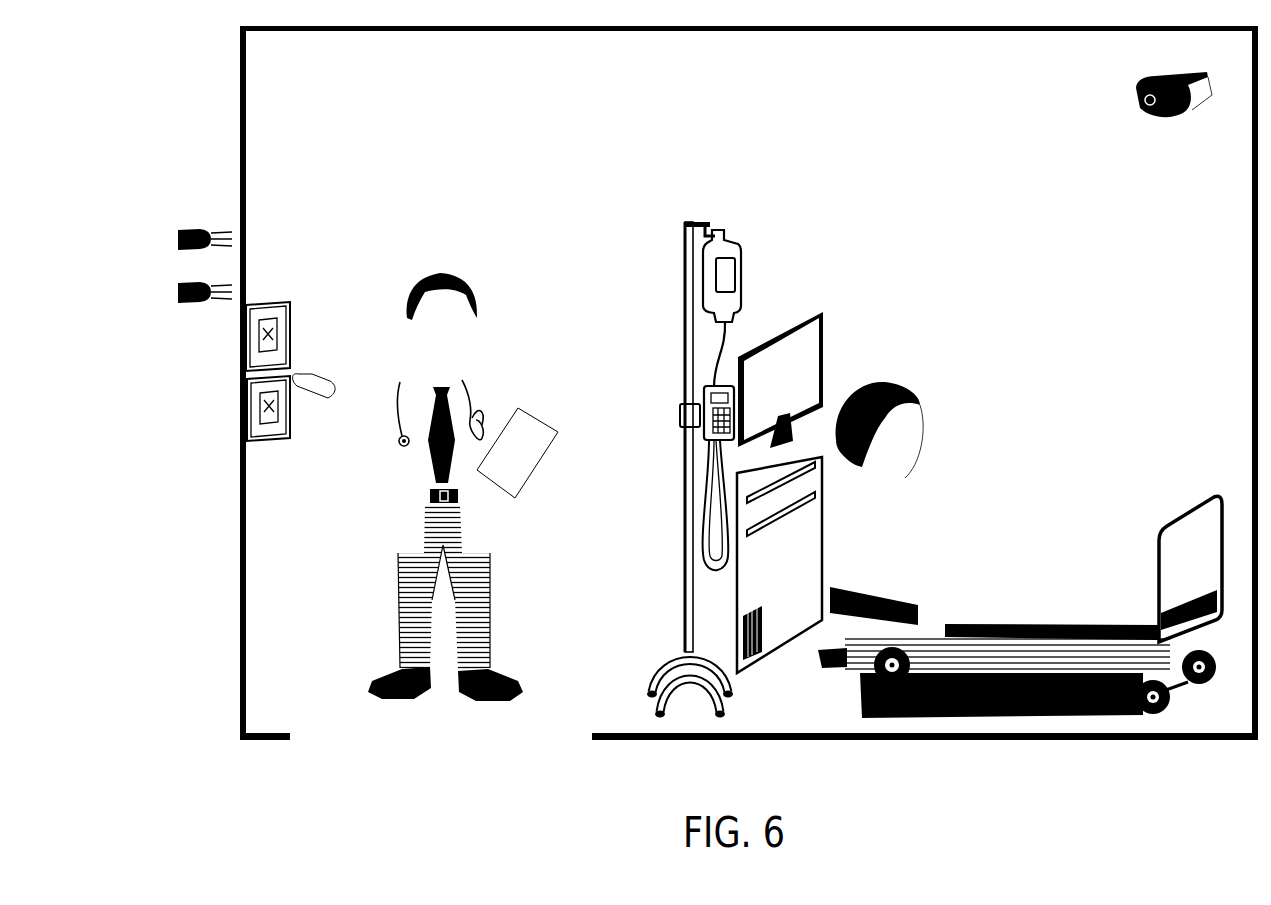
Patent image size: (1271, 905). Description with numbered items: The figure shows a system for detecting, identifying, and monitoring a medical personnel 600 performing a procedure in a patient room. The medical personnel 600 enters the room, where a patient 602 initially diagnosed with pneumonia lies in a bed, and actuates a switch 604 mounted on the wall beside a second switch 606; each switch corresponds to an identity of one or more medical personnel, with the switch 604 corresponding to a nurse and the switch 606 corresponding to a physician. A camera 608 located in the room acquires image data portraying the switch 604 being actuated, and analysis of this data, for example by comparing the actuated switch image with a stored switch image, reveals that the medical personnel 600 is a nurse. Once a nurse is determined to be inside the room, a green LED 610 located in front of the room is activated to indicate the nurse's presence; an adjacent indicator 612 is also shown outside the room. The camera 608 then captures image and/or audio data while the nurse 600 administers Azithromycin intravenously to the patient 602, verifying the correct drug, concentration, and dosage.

The medical personnel 600 is at (446, 292).
The patient 602 is at (890, 380).
The switch 604 is at (288, 378).
The switch 606 is at (288, 306).
The camera 608 is at (1138, 99).
The green LED 610 is at (190, 286).
The motion sensor 612 is at (190, 230).